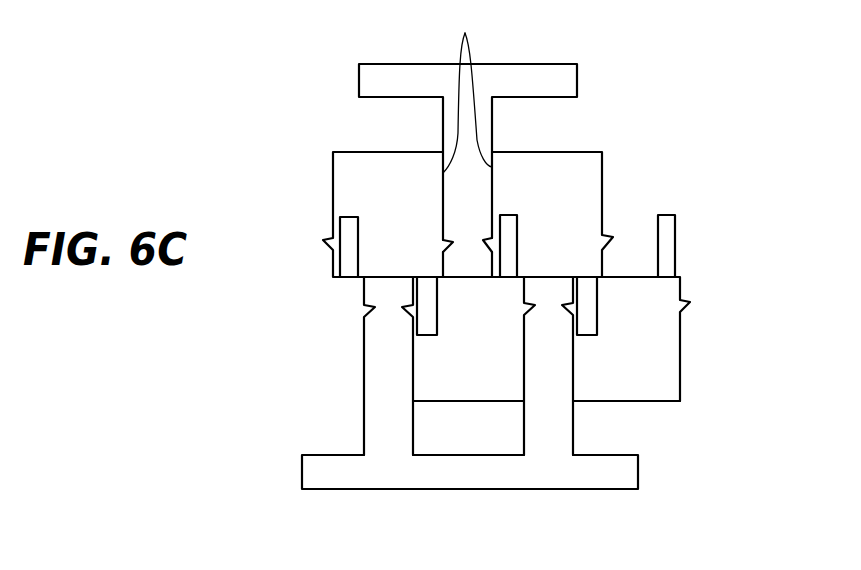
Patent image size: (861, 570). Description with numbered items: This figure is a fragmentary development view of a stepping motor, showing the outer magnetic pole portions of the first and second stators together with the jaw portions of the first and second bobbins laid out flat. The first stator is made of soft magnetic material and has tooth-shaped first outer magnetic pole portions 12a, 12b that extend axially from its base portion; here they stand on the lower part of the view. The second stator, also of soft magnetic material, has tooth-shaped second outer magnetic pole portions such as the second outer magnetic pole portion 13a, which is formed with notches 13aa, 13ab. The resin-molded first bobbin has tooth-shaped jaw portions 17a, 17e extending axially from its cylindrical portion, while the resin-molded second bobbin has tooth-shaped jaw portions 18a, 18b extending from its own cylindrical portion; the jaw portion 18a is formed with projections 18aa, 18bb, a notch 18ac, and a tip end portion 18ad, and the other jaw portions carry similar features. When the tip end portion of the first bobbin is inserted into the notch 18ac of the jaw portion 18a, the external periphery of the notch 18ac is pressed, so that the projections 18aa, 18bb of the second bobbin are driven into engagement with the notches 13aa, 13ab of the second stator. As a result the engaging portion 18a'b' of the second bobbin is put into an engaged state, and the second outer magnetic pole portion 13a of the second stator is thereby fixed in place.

The engaging portion 18a'b' is at (468, 123).
The notch 13aa is at (487, 238).
The notch 13ab is at (452, 238).
The projection 18bb is at (440, 243).
The notch 18ac is at (500, 216).
The projection 18aa is at (518, 241).
The jaw portion 18a is at (600, 290).
The jaw portion 18b is at (368, 260).
The first outer magnetic pole portion 12b is at (380, 297).
The second outer magnetic pole portion 13a is at (470, 263).
The tip end portion 18ad is at (587, 305).
The first outer magnetic pole portion 12a is at (547, 293).
The jaw portion 17e is at (650, 387).
The jaw portion 17a is at (467, 383).